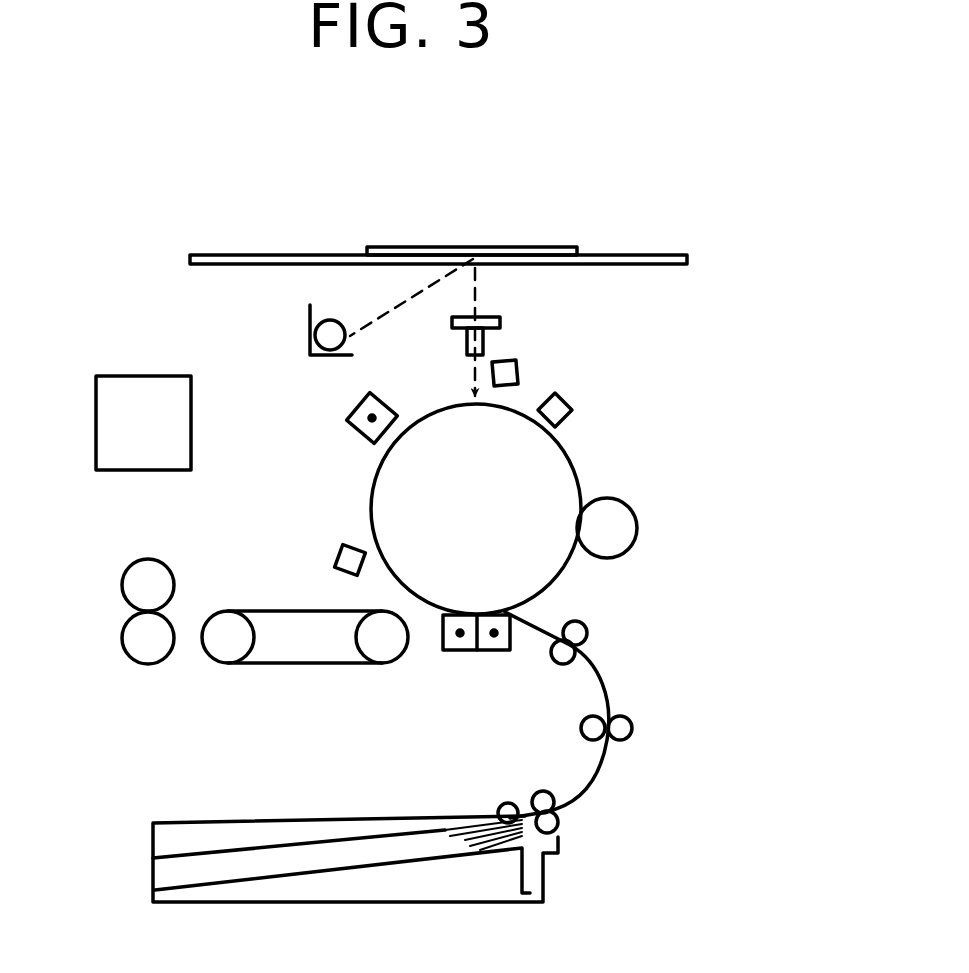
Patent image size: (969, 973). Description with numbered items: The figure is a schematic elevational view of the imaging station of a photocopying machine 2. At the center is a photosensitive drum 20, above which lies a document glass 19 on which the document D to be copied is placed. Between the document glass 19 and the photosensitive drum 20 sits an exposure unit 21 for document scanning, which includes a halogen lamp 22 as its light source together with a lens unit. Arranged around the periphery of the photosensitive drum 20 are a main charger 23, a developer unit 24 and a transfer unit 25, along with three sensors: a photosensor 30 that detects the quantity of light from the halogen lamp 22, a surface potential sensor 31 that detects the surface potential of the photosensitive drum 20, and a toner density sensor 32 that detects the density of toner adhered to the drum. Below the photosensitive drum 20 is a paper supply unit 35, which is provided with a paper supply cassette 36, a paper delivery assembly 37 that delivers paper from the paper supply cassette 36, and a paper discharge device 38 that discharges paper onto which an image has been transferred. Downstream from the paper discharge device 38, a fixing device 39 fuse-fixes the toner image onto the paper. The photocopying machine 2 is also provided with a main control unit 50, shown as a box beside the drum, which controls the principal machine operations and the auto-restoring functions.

The photocopying machine 2 is at (744, 228).
The document glass 19 is at (637, 266).
The document D is at (540, 247).
The photosensitive drum 20 is at (527, 558).
The exposure unit 21 is at (393, 356).
The halogen lamp 22 is at (322, 338).
The main charger 23 is at (358, 437).
The developer unit 24 is at (637, 515).
The transfer unit 25 is at (477, 655).
The photosensor 30 is at (515, 368).
The surface potential sensor 31 is at (567, 403).
The toner density sensor 32 is at (342, 561).
The paper supply unit 35 is at (333, 803).
The paper supply cassette 36 is at (535, 878).
The paper delivery assembly 37 is at (628, 690).
The paper discharge device 38 is at (286, 674).
The fixing device 39 is at (144, 650).
The main control unit 50 is at (136, 472).